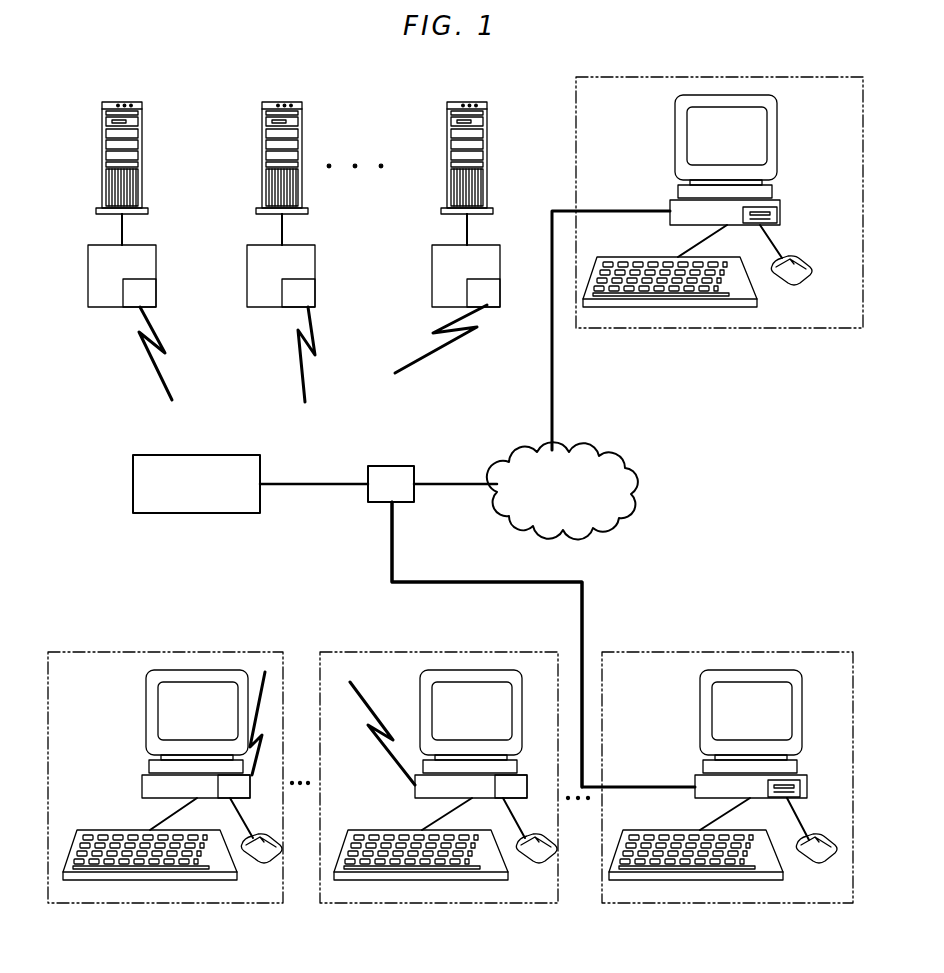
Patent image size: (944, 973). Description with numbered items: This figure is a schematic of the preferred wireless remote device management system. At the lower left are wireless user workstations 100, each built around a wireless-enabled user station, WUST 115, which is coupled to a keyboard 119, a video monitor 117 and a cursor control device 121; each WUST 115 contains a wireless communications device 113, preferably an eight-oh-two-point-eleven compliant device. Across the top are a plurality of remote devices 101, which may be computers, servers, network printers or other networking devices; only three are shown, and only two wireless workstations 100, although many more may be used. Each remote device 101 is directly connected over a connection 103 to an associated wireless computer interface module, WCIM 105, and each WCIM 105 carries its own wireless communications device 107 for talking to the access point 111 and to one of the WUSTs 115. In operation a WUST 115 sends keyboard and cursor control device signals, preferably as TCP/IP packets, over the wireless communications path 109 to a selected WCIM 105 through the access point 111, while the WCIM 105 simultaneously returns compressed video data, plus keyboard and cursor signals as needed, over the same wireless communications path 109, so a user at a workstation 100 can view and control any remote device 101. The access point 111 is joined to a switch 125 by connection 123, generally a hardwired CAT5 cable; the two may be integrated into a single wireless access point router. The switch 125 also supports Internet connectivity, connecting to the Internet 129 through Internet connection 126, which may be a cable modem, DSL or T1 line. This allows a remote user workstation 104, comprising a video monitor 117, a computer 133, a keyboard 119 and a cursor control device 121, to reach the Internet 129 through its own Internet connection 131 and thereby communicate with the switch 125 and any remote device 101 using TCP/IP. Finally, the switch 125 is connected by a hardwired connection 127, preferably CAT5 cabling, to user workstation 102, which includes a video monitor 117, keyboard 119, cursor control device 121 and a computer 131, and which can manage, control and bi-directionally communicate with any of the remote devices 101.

The wireless user workstation 100 is at (133, 638).
The remote device 101 is at (110, 102).
The user workstation 102 is at (777, 632).
The connection 103 is at (119, 225).
The user workstation 104 is at (572, 88).
The wireless computer interface module 105 is at (156, 252).
The wireless communications device 107 is at (156, 290).
The wireless communications path 109 is at (372, 712).
The access point 111 is at (133, 462).
The wireless communications device 113 is at (250, 782).
The wireless-enabled user station 115 is at (142, 778).
The video monitor 117 is at (777, 115).
The keyboard 119 is at (603, 258).
The cursor control device 121 is at (796, 262).
The connection 123 is at (282, 485).
The switch 125 is at (385, 466).
The Internet connection 126 is at (440, 484).
The hardwired connection 127 is at (450, 582).
The Internet 129 is at (612, 455).
The Internet connection 131 is at (552, 210).
The computer 133 is at (672, 200).